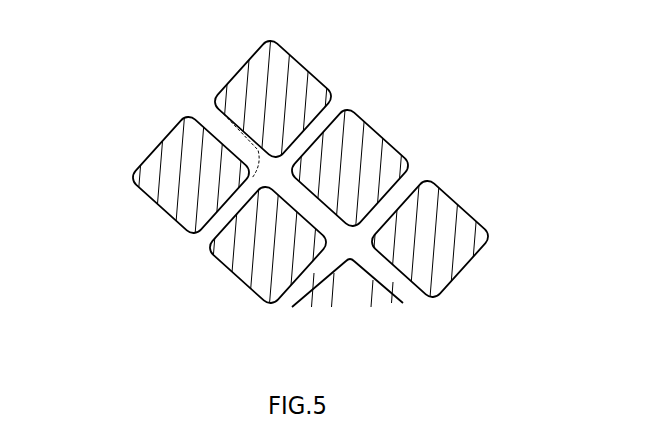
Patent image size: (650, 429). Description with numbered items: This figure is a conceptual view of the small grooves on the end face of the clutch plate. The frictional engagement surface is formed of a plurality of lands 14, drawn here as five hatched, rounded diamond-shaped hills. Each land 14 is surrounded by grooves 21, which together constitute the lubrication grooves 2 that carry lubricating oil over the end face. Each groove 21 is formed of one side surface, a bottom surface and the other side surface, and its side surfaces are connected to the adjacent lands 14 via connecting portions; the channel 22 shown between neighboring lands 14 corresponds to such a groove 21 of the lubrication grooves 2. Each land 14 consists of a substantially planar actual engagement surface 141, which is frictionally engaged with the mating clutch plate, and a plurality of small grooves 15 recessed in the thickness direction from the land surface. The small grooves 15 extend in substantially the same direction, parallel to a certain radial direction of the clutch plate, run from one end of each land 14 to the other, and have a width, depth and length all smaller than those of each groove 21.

The lubrication grooves 2 is at (323, 80).
The lands 14 is at (277, 70).
The actual engagement surface 141 is at (295, 78).
The small grooves 15 is at (248, 65).
The grooves 21 is at (291, 309).
The groove 22 is at (217, 107).